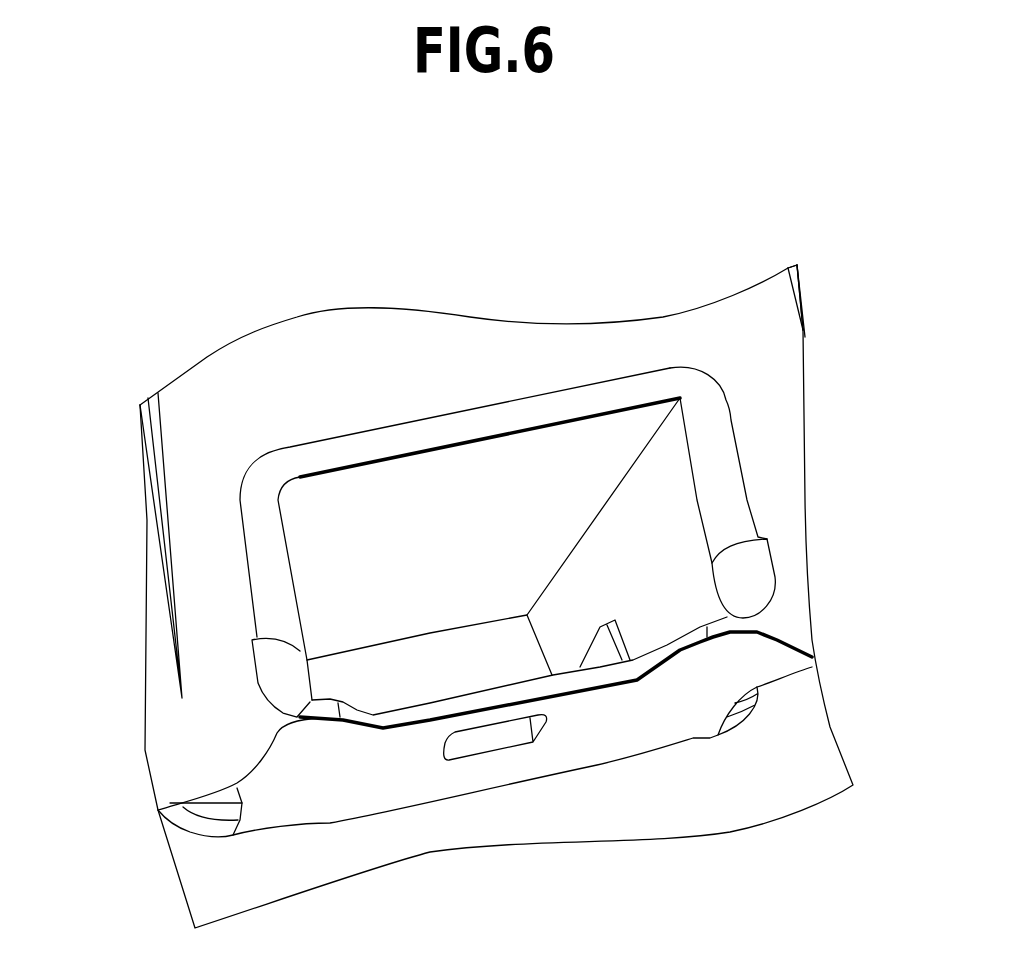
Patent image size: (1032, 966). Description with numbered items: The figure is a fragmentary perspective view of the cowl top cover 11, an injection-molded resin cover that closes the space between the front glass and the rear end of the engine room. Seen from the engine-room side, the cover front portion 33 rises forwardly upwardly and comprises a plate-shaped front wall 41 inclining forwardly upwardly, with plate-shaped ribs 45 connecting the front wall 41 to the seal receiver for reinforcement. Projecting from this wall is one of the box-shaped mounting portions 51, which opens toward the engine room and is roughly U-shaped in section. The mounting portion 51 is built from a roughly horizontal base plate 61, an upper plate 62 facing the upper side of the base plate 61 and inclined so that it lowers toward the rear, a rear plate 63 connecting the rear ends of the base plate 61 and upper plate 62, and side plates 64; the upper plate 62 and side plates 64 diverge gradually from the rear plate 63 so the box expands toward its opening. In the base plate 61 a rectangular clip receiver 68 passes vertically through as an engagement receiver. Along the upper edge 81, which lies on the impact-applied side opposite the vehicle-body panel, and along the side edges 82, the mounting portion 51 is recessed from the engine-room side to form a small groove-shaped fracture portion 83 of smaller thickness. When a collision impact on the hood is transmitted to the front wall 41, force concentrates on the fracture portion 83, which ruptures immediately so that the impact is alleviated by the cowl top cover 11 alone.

The cowl top cover 11 is at (198, 347).
The cover front portion 33 is at (785, 378).
The front wall 41 is at (783, 330).
The ribs 45 is at (800, 282).
The mounting portion 51 is at (687, 608).
The base plate 61 is at (378, 795).
The upper plate 62 is at (400, 495).
The rear plate 63 is at (387, 663).
The side plates 64 is at (700, 582).
The clip receiver 68 is at (487, 743).
The upper edge 81 is at (502, 417).
The side edges 82 is at (750, 488).
The fracture portion 83 is at (727, 442).